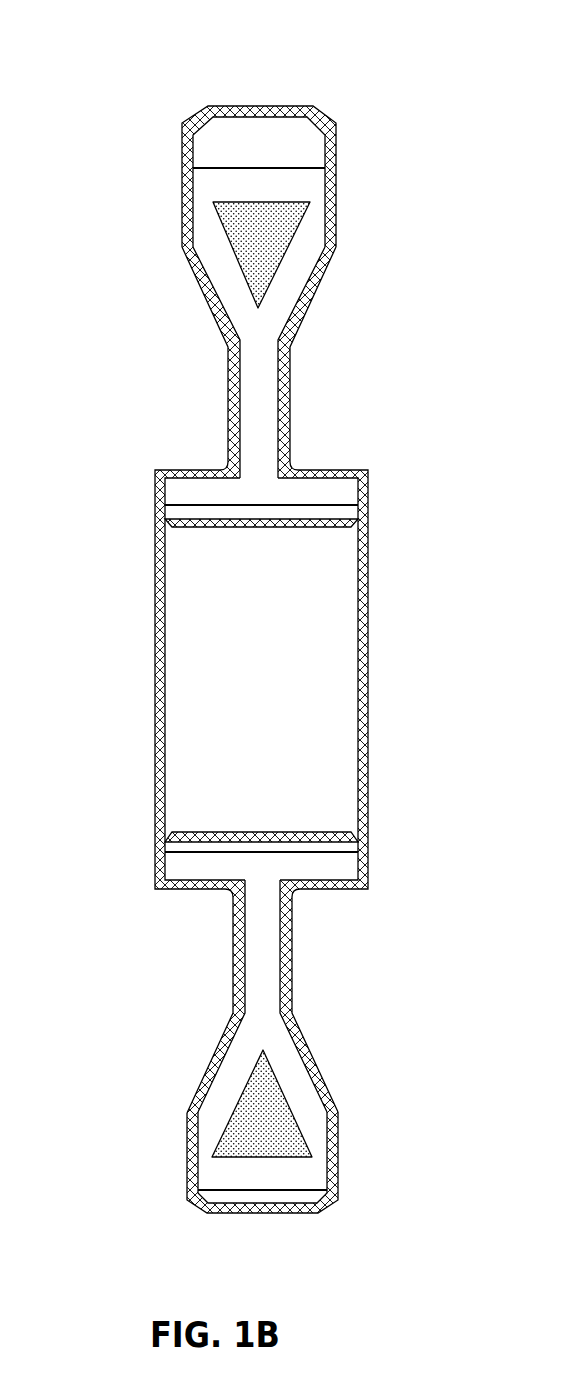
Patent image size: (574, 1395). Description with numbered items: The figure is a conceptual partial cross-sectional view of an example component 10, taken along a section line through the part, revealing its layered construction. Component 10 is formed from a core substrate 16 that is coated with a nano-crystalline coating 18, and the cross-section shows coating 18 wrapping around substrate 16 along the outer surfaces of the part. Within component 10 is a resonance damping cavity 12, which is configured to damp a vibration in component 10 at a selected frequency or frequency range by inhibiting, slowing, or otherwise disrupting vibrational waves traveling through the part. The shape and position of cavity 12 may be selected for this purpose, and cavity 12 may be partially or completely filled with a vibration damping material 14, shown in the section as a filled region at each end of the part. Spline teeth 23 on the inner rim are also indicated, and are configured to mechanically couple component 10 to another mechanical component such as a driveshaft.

The component 10 is at (132, 47).
The resonance damping cavity 12 is at (213, 204).
The vibration damping material 14 is at (305, 228).
The core substrate 16 is at (255, 378).
The nano-crystalline coating 18 is at (288, 403).
The spline teeth 23 is at (273, 513).